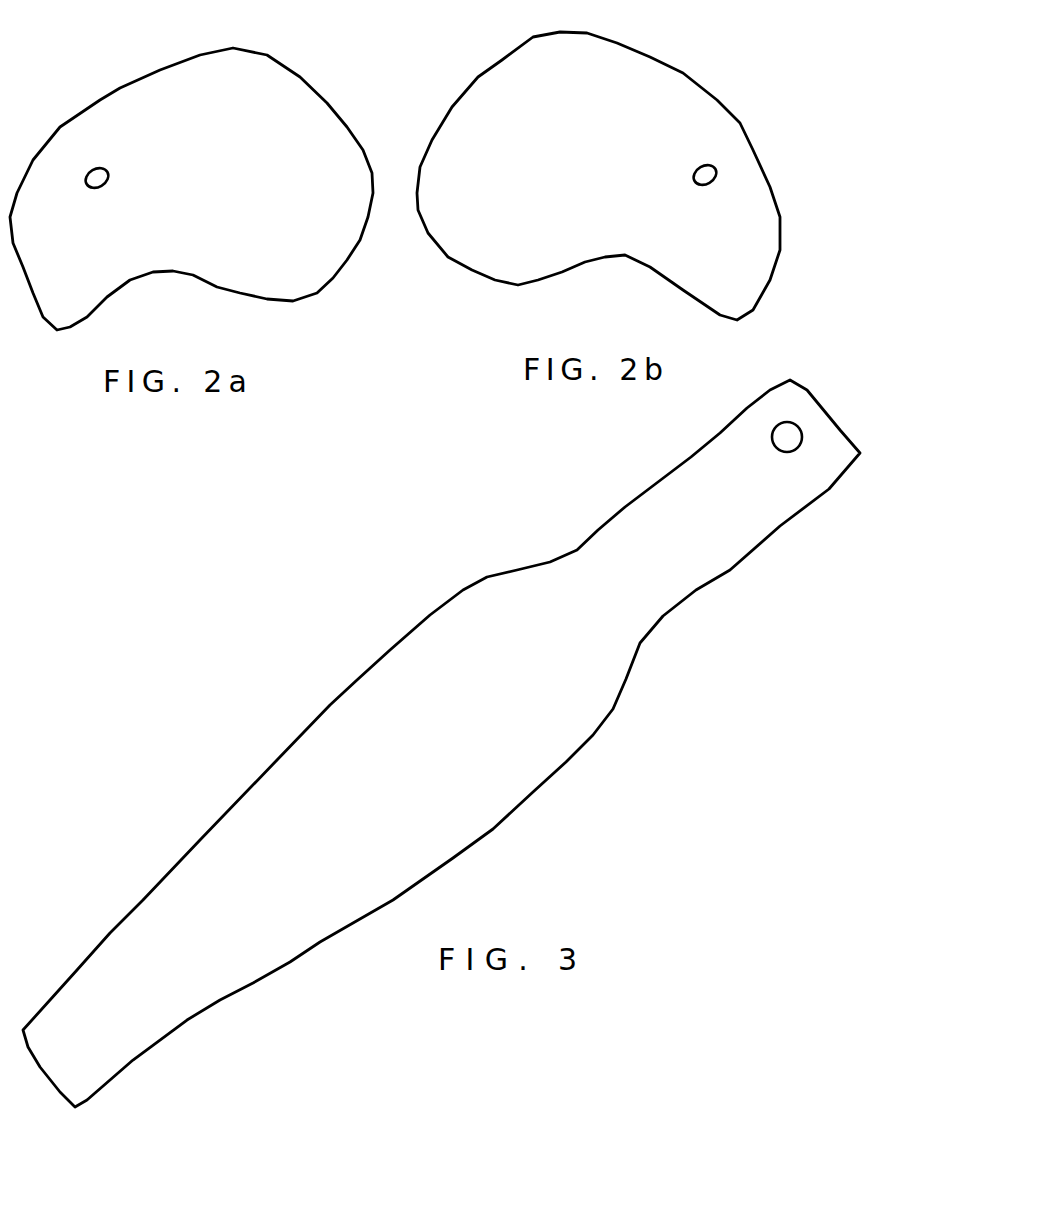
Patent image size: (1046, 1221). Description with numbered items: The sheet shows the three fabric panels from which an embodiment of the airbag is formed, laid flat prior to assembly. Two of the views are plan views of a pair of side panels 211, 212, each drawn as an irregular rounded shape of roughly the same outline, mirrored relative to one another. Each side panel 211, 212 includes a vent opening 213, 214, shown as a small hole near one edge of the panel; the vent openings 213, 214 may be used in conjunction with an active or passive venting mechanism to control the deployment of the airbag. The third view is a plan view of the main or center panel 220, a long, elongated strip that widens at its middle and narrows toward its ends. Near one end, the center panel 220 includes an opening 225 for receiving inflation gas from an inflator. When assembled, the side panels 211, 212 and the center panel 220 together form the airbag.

In FIG. 2B, the side panel 211 is at (657, 82).
In FIG. 2A, the side panel 212 is at (247, 67).
In FIG. 2B, the vent opening 213 is at (720, 178).
In FIG. 2A, the vent opening 214 is at (83, 163).
In FIG. 3, the center panel 220 is at (583, 700).
In FIG. 3, the opening 225 is at (805, 443).